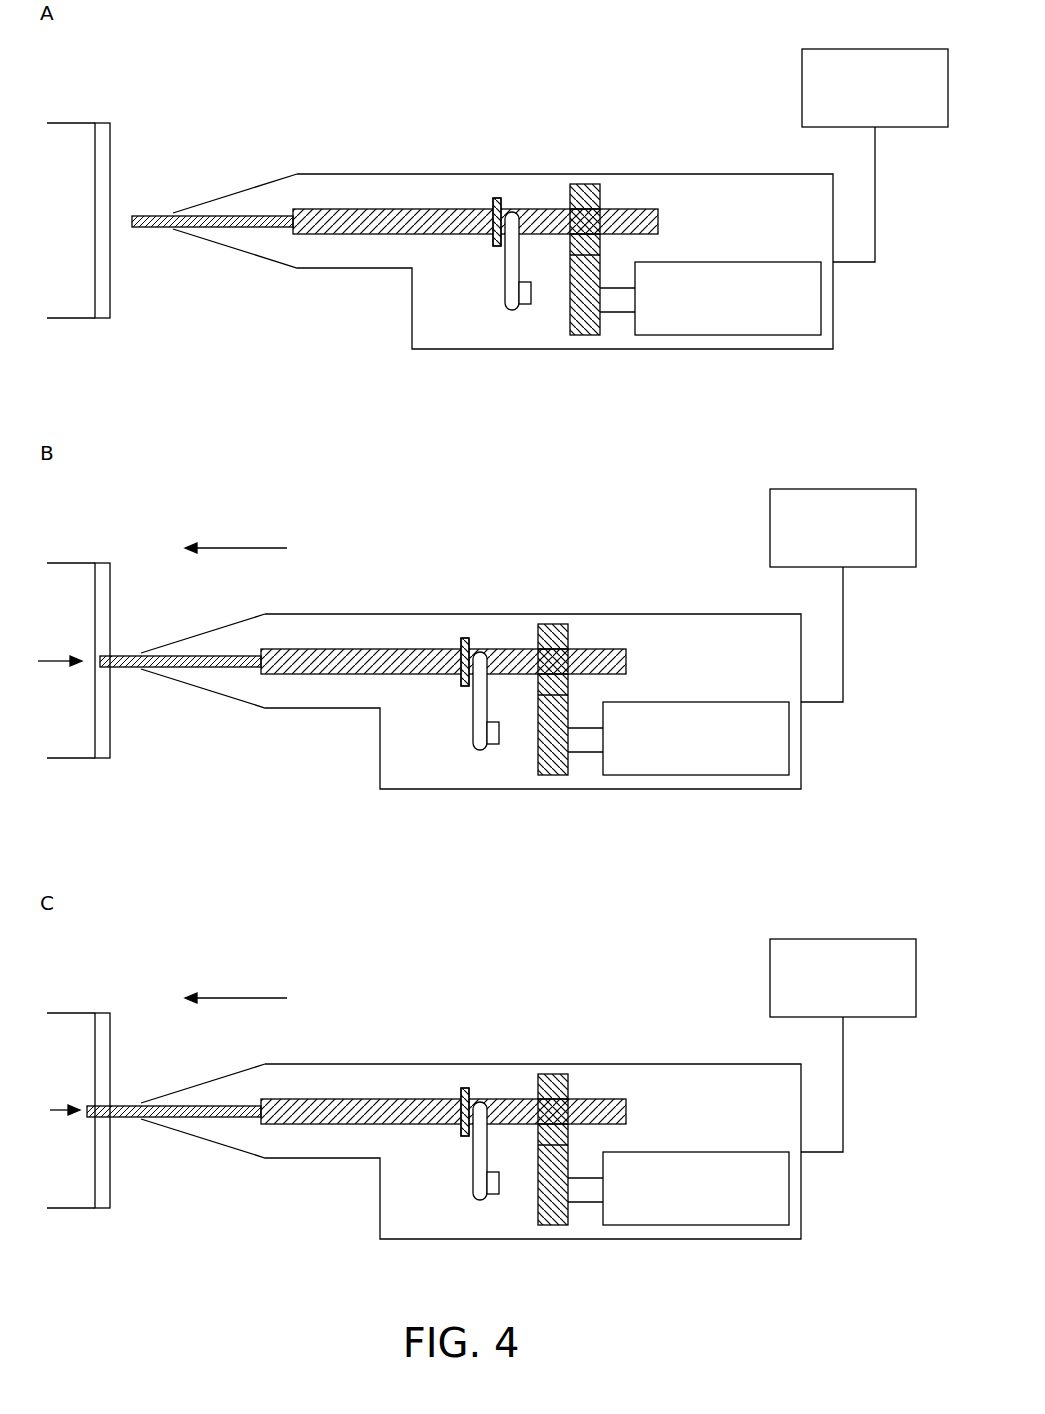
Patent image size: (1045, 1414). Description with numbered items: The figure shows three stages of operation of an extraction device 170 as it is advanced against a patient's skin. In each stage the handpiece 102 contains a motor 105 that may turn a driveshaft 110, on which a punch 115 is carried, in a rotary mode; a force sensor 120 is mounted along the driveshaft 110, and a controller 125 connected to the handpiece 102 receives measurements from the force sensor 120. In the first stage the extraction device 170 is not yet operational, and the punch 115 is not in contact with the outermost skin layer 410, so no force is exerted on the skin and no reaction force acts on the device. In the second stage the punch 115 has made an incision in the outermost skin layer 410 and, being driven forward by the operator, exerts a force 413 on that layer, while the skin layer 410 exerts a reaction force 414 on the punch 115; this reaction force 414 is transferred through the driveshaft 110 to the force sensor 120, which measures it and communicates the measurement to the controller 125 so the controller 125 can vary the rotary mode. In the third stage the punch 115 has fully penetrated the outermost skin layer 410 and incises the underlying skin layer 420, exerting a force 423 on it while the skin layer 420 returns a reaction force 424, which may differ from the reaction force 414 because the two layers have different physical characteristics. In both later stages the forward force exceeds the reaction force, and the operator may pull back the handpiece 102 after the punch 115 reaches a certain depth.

The handpiece 102 is at (730, 190).
The motor 105 is at (722, 335).
The driveshaft 110 is at (340, 213).
The punch 115 is at (222, 227).
The force sensor 120 is at (515, 298).
The controller 125 is at (802, 65).
The extraction device 170 is at (517, 693).
The outermost skin layer 410 is at (102, 156).
The force 413 is at (236, 507).
The reaction force 414 is at (56, 687).
The underlying skin layer 420 is at (77, 137).
The force 423 is at (236, 957).
The reaction force 424 is at (59, 1137).